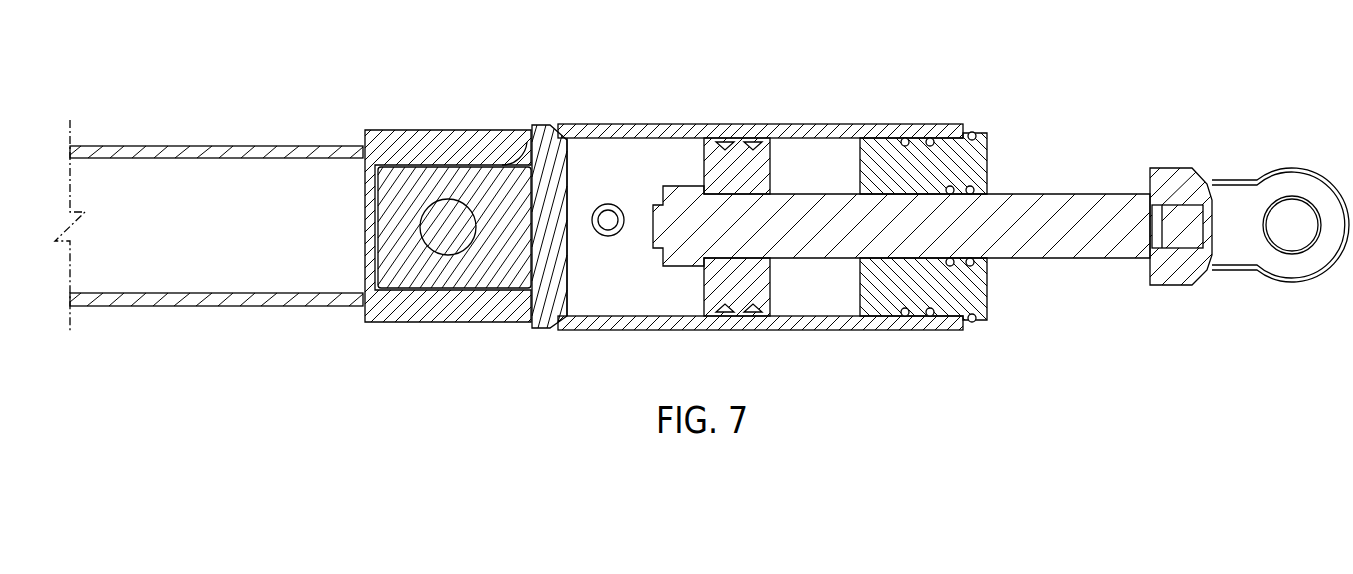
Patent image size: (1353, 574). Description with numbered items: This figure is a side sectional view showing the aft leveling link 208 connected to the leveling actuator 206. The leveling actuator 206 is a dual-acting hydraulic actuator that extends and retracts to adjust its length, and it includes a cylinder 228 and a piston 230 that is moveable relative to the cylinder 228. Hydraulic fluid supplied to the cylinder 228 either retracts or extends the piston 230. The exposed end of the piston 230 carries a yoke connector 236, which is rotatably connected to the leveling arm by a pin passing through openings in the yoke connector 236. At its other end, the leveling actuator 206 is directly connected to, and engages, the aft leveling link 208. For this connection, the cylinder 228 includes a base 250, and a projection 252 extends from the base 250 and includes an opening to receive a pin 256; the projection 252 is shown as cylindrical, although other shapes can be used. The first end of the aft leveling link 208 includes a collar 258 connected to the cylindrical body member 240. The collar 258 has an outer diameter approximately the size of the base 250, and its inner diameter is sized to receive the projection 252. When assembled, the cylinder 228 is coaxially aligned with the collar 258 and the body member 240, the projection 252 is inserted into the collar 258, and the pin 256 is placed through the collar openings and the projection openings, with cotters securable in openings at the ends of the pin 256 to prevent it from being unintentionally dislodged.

The leveling actuator 206 is at (953, 218).
The aft leveling link 208 is at (209, 216).
The cylinder 228 is at (792, 331).
The piston 230 is at (1062, 259).
The yoke connector 236 is at (1303, 282).
The cylindrical body member 240 is at (215, 307).
The base 250 is at (430, 228).
The projection 252 is at (440, 267).
The pin 256 is at (438, 233).
The collar 258 is at (423, 142).